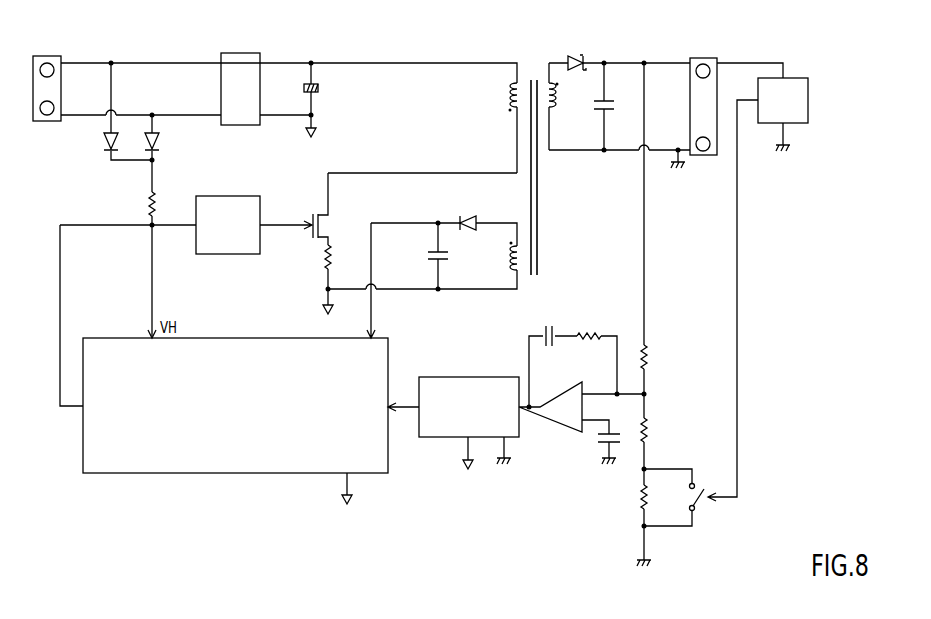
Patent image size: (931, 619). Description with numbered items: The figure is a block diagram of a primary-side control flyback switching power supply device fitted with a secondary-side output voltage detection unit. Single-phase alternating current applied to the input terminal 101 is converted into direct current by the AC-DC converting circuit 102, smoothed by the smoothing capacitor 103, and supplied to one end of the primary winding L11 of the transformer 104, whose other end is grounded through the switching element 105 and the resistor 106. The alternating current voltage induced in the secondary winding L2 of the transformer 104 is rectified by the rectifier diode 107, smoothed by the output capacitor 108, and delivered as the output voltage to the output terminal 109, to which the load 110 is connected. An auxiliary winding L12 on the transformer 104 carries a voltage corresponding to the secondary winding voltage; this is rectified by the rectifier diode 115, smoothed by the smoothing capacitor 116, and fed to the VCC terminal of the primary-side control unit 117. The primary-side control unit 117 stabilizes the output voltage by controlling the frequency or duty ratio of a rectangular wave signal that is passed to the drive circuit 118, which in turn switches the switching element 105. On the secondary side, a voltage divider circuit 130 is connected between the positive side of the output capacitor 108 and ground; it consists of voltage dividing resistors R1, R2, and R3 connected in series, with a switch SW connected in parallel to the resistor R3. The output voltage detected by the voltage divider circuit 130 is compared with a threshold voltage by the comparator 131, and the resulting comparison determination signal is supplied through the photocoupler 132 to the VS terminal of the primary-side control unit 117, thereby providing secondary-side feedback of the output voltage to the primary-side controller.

The input terminal 101 is at (47, 53).
The AC-DC converting circuit 102 is at (240, 53).
The smoothing capacitor 103 is at (316, 83).
The transformer 104 is at (524, 147).
The switching element 105 is at (312, 213).
The resistor 106 is at (322, 263).
The rectifier diode 107 is at (573, 56).
The output capacitor 108 is at (612, 100).
The output terminal 109 is at (703, 58).
The load 110 is at (795, 78).
The rectifier diode 115 is at (468, 215).
The smoothing capacitor 116 is at (446, 262).
The primary-side control unit 117 is at (228, 338).
The drive circuit 118 is at (240, 196).
The voltage divider circuit 130 is at (671, 442).
The comparator 131 is at (560, 427).
The photocoupler 132 is at (484, 377).
The primary winding L11 is at (510, 97).
The auxiliary winding L12 is at (538, 251).
The secondary winding L2 is at (556, 93).
The voltage dividing resistor R1 is at (652, 358).
The voltage dividing resistor R2 is at (652, 430).
The voltage dividing resistor R3 is at (636, 500).
The switch SW is at (702, 513).